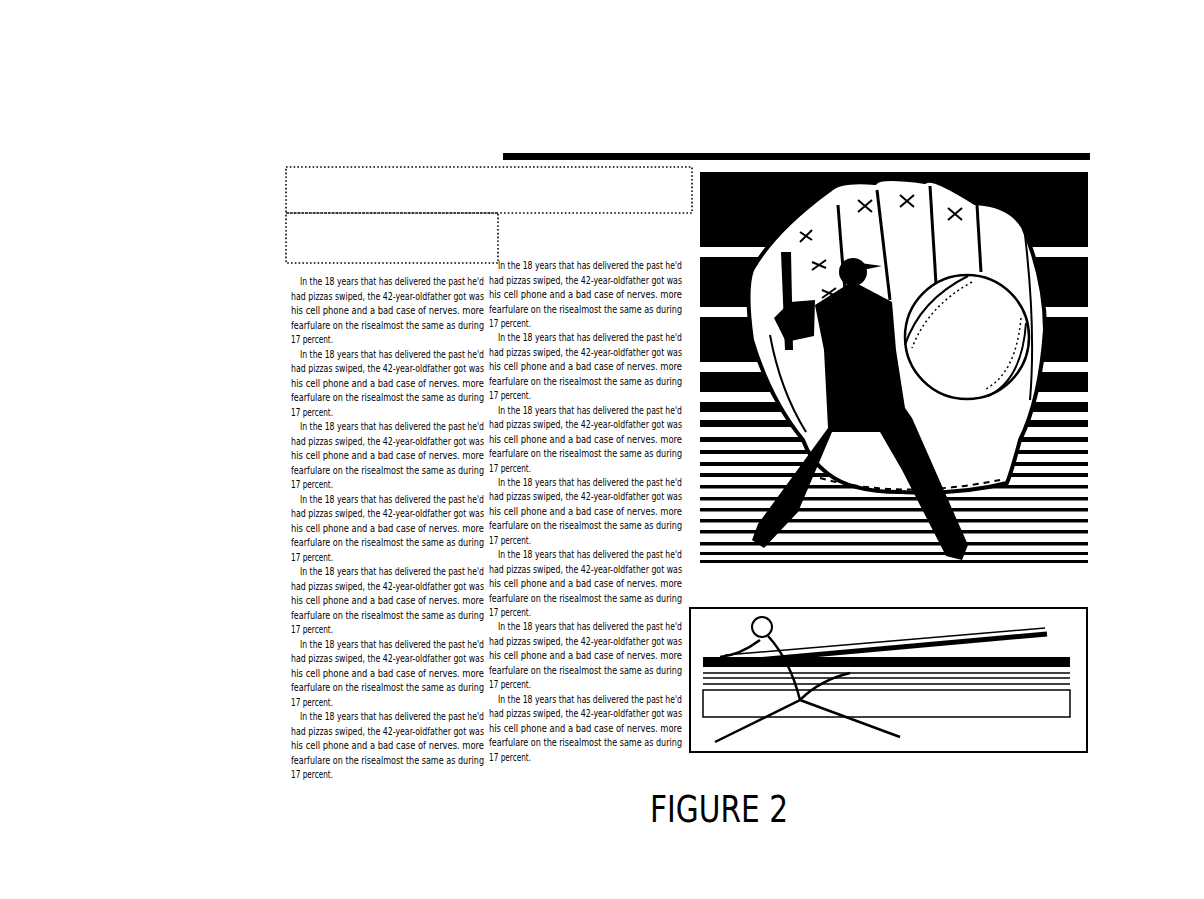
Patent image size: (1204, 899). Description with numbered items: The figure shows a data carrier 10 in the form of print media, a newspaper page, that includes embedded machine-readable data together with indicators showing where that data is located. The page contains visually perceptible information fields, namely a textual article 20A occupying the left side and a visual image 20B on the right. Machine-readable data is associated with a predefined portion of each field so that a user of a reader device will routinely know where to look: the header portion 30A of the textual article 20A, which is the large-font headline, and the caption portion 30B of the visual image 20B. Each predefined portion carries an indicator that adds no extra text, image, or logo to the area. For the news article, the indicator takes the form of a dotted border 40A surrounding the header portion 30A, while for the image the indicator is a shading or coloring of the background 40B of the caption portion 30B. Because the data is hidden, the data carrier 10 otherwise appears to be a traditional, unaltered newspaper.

The data carrier 10 is at (1128, 130).
The textual article 20A is at (283, 170).
The header portion 30A is at (290, 209).
The dotted border 40A is at (289, 170).
The visual image 20B is at (1103, 157).
The caption portion 30B is at (1097, 588).
The shading or coloring of the background 40B is at (1028, 593).